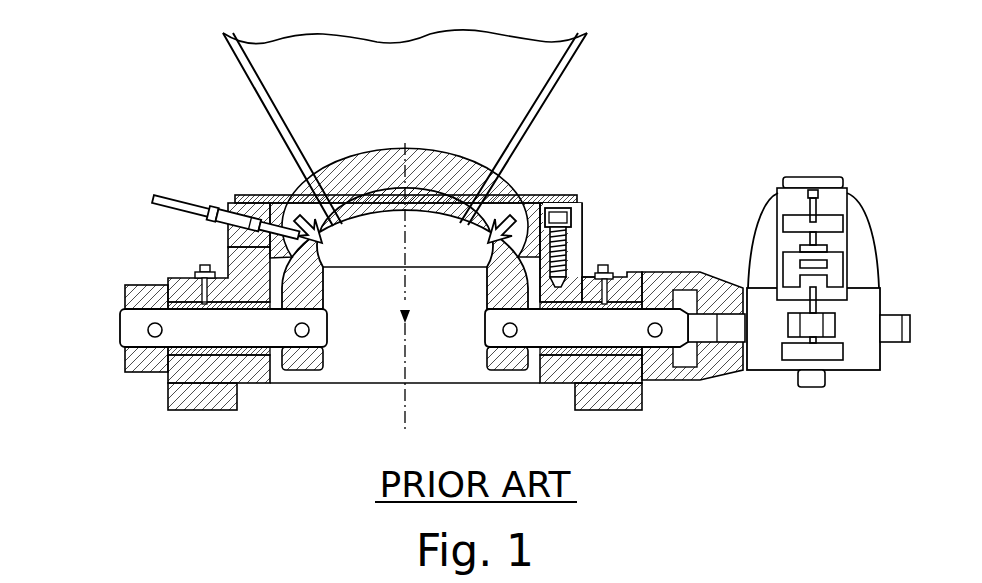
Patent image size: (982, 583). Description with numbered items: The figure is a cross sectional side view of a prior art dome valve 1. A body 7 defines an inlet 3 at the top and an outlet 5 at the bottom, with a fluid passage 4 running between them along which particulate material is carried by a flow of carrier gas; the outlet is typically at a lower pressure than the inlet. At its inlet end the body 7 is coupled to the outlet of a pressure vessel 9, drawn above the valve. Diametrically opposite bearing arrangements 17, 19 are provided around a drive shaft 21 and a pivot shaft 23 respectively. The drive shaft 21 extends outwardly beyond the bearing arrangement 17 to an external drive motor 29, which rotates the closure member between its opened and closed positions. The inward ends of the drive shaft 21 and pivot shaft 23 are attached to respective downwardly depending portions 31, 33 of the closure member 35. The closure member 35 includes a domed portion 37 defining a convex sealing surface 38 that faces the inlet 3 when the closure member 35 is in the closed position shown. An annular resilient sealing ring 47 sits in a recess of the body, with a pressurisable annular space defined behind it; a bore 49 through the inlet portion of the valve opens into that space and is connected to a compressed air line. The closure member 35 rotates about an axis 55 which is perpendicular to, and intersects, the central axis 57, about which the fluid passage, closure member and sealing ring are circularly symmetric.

The dome valve 1 is at (148, 261).
The inlet 3 is at (446, 190).
The fluid passage 4 is at (393, 137).
The outlet 5 is at (428, 375).
The body 7 is at (598, 224).
The pressure vessel 9 is at (224, 82).
The bearing arrangement 17 is at (626, 356).
The bearing arrangement 19 is at (228, 354).
The drive shaft 21 is at (486, 332).
The pivot shaft 23 is at (327, 332).
The external drive motor 29 is at (762, 352).
The downwardly depending portion 31 is at (494, 360).
The downwardly depending portion 33 is at (316, 362).
The closure member 35 is at (308, 270).
The domed portion 37 is at (372, 222).
The convex sealing surface 38 is at (348, 218).
The sealing ring 47 is at (462, 237).
The bore 49 is at (273, 213).
The axis 55 is at (349, 230).
The central axis 57 is at (406, 392).